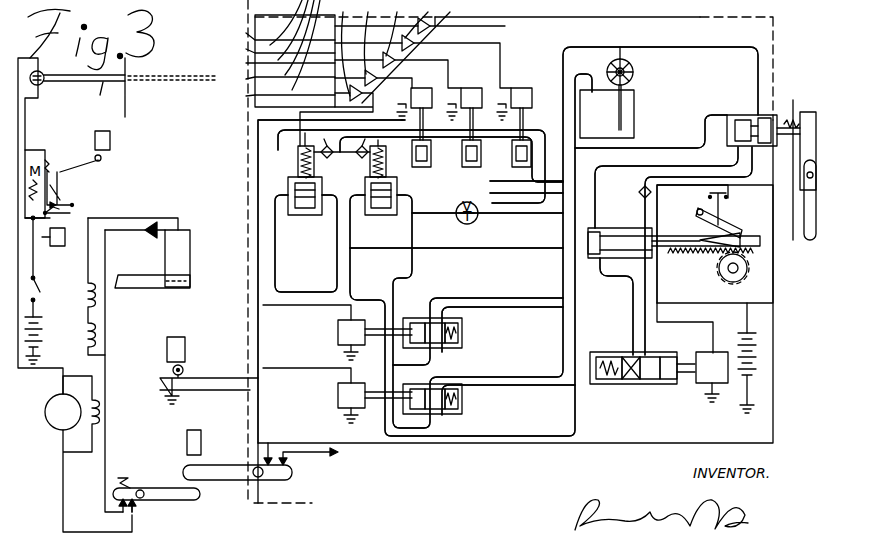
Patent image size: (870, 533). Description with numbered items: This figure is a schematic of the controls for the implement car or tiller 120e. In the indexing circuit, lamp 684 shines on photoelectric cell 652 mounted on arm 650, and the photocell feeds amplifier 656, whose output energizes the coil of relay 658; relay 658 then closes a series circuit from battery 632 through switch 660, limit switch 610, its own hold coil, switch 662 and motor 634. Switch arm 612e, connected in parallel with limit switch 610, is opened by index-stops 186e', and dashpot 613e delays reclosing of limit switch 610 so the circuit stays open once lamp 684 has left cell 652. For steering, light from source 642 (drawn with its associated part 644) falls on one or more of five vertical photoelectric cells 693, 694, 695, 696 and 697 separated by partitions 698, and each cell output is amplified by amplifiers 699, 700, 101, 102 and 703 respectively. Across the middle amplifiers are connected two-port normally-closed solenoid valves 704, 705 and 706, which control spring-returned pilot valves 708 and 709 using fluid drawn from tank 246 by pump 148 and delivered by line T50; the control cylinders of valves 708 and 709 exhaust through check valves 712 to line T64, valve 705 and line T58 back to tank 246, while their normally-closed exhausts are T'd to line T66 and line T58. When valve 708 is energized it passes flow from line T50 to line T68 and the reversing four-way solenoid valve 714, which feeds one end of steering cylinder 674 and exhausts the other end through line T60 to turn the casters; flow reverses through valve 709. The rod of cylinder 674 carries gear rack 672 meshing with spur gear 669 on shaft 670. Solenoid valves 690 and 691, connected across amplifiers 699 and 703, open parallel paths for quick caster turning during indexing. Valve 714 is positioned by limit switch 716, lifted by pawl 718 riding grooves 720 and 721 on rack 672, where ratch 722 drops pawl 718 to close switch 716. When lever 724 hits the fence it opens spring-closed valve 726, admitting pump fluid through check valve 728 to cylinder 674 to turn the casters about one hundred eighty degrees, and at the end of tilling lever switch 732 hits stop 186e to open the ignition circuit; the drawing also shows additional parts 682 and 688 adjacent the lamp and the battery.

The implement car or tiller 120e is at (772, 62).
The pump 148 is at (633, 72).
The tank 246 is at (636, 110).
The stop 186e is at (168, 442).
The index-stops 186e' is at (126, 145).
The limit switch 610 is at (59, 216).
The switch arm 612e is at (80, 167).
The dashpot 613e is at (53, 247).
The battery 632 is at (32, 364).
The motor 634 is at (49, 425).
The light source 642 is at (44, 84).
The switch contact bar 644 is at (106, 87).
The arm 650 is at (192, 280).
The photoelectric cell 652 is at (192, 230).
The amplifier 656 is at (152, 227).
The relay 658 is at (97, 330).
The switch 660 is at (38, 290).
The switch 662 is at (143, 502).
The spur gear 669 is at (746, 282).
The shaft 670 is at (738, 268).
The gear rack 672 is at (688, 254).
The cylinder 674 is at (632, 228).
The relay coil 682 is at (186, 347).
The lamp 684 is at (184, 370).
The battery 688 is at (762, 372).
The solenoid valve 690 is at (338, 336).
The solenoid valve 691 is at (338, 398).
The vertical photoelectric cell 693 is at (315, 31).
The vertical photoelectric cell 694 is at (307, 47).
The vertical photoelectric cell 695 is at (298, 62).
The vertical photoelectric cell 696 is at (246, 78).
The vertical photoelectric cell 697 is at (281, 95).
The partitions 698 is at (292, 45).
The amplifier 699 is at (433, 51).
The amplifier 700 is at (456, 44).
The amplifier 101 is at (422, 44).
The amplifier 102 is at (387, 44).
The amplifier 703 is at (336, 73).
The two-port normally-closed solenoid valve 704 is at (510, 75).
The two-port normally-closed solenoid valve 705 is at (462, 75).
The two-port normally-closed solenoid valve 706 is at (413, 75).
The pilot valve 708 is at (290, 168).
The pilot valve 709 is at (393, 188).
The check valve 712 is at (338, 160).
The reversing four-way spring-returned solenoid valve 714 is at (622, 386).
The limit switch 716 is at (728, 190).
The pawl 718 is at (735, 228).
The cam track groove 720 is at (760, 235).
The return groove 721 is at (758, 250).
The drop-off or ratch 722 is at (697, 212).
The one-way jointed lever 724 is at (808, 110).
The spring-closed double-passage valve 726 is at (746, 113).
The check valve 728 is at (638, 192).
The lever switch 732 is at (196, 482).
The line T50 is at (568, 47).
The line T58 is at (574, 76).
The line T60 is at (522, 420).
The line T64 is at (482, 198).
The line T66 is at (460, 250).
The line T68 is at (328, 294).